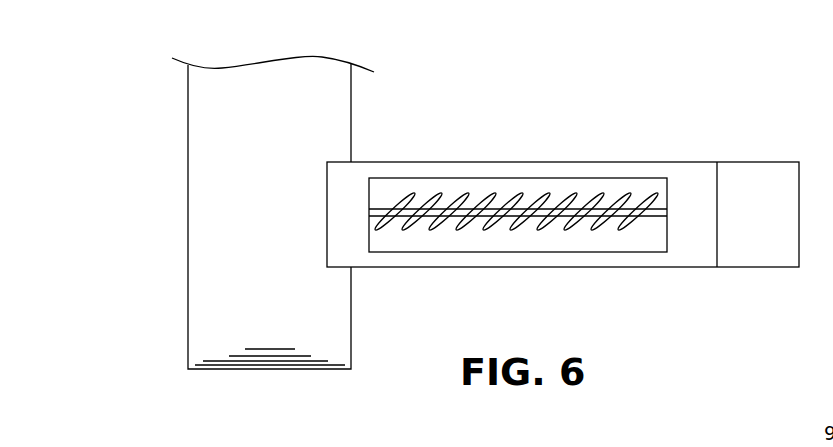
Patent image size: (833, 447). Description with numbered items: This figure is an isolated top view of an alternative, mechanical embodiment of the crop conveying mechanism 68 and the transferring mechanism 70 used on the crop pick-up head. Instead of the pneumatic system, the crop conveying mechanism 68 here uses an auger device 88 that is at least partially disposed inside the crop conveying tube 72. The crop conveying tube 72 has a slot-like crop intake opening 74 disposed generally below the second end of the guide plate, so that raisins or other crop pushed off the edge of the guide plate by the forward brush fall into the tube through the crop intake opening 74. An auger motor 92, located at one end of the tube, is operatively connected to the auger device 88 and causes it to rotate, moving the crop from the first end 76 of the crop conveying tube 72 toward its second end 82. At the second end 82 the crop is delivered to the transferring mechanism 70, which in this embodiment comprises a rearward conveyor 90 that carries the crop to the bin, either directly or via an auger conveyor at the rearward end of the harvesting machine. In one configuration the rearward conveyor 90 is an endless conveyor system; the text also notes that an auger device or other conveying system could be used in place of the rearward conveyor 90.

The crop conveying mechanism 68 is at (652, 113).
The transferring mechanism 70 is at (181, 118).
The crop conveying tube 72 is at (530, 162).
The crop intake opening 74 is at (578, 178).
The first end 76 is at (716, 158).
The second end 82 is at (331, 158).
The auger device 88 is at (443, 213).
The rearward conveyor 90 is at (263, 172).
The auger motor 92 is at (757, 258).